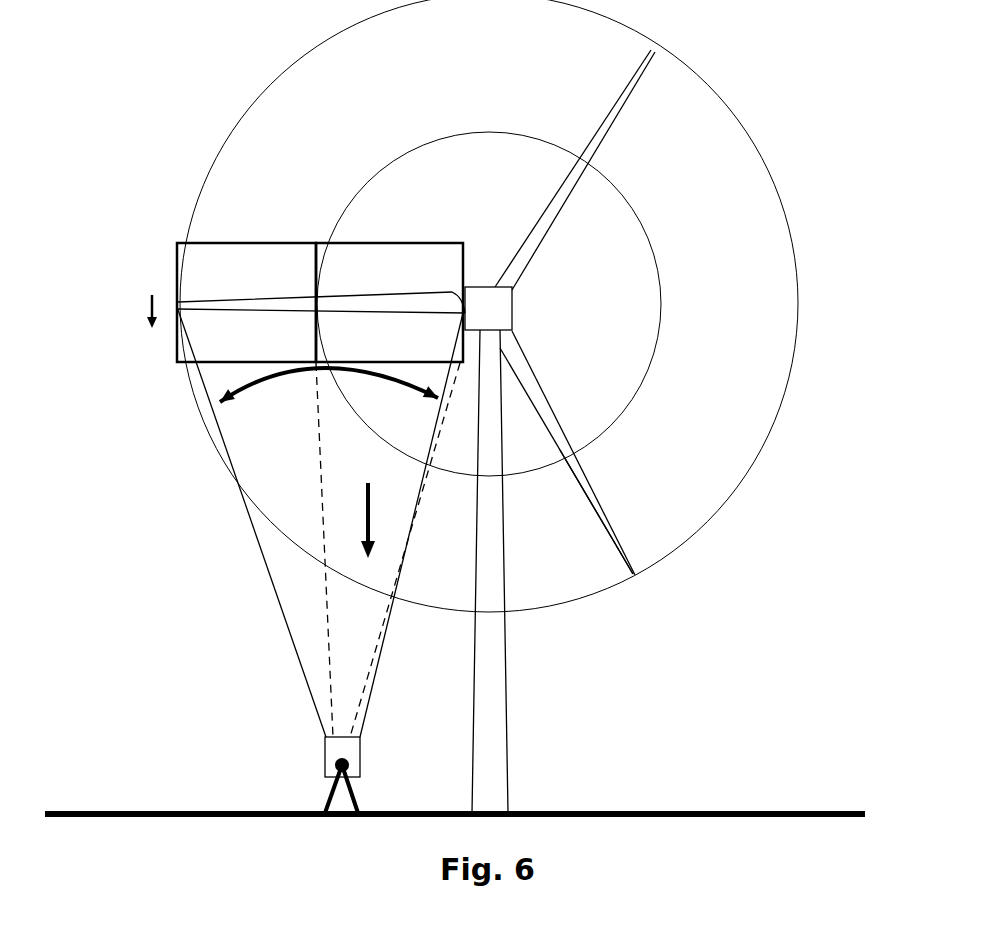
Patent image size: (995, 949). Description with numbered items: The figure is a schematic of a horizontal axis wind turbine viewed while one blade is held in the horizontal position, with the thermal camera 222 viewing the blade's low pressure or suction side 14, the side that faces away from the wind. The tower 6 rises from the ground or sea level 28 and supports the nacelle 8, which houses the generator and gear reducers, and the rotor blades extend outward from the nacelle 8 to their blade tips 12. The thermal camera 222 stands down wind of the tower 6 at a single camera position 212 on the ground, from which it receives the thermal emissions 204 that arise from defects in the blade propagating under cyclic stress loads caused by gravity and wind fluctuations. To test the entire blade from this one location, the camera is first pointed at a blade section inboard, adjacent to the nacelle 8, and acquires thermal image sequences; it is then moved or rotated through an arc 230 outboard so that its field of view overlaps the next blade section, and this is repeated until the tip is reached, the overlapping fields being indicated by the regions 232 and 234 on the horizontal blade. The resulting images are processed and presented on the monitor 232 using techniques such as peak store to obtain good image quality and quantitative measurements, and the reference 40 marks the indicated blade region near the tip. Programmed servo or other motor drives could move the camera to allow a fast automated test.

The tower 6 is at (498, 650).
The nacelle 8 is at (497, 307).
The blade tips 12 is at (177, 307).
The low pressure or suction side 14 is at (593, 508).
The ground or sea level 28 is at (683, 811).
The blade tip 40 is at (126, 331).
The thermal emissions 204 is at (350, 640).
The camera position 212 is at (333, 810).
The thermal camera 222 is at (327, 760).
The arc 230 is at (267, 383).
The monitor 232 is at (386, 293).
The first measurement region 234 is at (217, 293).